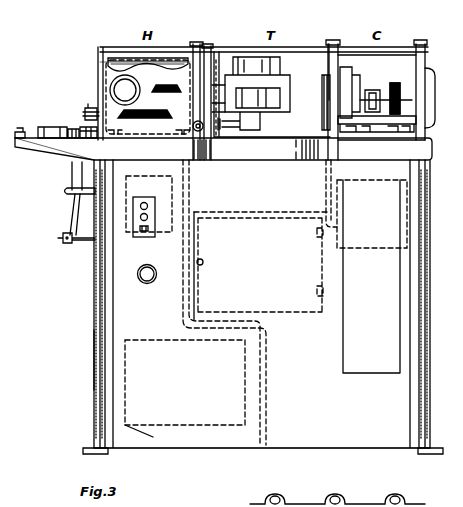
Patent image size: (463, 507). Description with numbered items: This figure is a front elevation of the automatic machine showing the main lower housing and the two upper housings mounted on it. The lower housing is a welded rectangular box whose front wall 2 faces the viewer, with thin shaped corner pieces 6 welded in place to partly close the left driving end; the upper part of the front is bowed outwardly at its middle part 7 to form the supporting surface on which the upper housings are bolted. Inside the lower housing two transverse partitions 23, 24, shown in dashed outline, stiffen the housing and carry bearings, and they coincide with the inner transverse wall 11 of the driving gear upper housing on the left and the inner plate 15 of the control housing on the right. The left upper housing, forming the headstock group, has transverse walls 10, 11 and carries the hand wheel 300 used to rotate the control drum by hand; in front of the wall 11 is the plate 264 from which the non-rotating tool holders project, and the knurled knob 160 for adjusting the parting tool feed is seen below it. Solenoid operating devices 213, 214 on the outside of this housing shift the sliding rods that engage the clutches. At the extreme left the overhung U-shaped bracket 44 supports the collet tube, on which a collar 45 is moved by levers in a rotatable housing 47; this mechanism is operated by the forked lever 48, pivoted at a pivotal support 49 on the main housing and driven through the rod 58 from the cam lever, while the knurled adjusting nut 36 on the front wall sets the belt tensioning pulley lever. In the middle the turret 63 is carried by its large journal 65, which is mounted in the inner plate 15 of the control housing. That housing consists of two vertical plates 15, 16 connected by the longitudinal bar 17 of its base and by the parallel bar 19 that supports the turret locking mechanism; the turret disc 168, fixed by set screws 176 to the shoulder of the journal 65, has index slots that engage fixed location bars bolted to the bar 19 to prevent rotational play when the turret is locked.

The hand wheel 300 is at (124, 77).
The transverse wall 10 is at (100, 63).
The solenoid operating devices 214 is at (91, 106).
The solenoid operating device 213 is at (84, 128).
The collar 45 is at (28, 130).
The overhung bracket 44 is at (43, 149).
The rotatable housing 47 is at (55, 140).
The pivotal support 49 is at (66, 192).
The lever 48 is at (70, 223).
The rod 58 is at (83, 244).
The knurled adjusting nut 36 is at (137, 272).
The corner pieces 6 is at (96, 360).
The front wall 2 is at (296, 434).
The transverse wall 11 is at (195, 44).
The plate 264 is at (208, 45).
The turret 63 is at (308, 83).
The bearing journal 65 is at (332, 43).
The vertical metal plate 15 is at (335, 42).
The vertical metal plate 16 is at (420, 42).
The turret disc 168 is at (344, 78).
The set screws 176 is at (360, 72).
The bar 19 is at (404, 118).
The longitudinal bar 17 is at (392, 138).
The knurled knob 160 is at (200, 131).
The middle part 7 is at (252, 150).
The transverse partition 23 is at (194, 192).
The transverse partition 24 is at (326, 202).